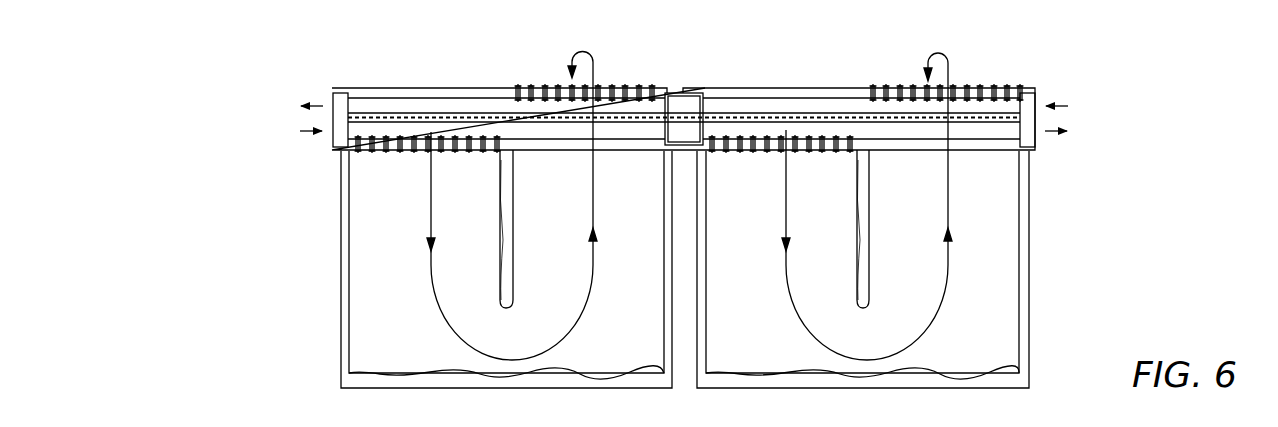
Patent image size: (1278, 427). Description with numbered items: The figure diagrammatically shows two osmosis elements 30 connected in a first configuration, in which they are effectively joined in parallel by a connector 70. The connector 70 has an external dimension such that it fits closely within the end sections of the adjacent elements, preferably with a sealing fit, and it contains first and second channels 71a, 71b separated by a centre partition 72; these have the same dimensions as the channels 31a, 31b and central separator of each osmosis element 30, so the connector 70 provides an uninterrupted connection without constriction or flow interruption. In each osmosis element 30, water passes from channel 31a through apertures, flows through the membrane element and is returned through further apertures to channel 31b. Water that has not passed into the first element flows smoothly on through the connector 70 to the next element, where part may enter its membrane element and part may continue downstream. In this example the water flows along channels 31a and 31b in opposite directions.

The osmosis element 30 is at (316, 242).
The channel 31a is at (356, 127).
The channel 31b is at (362, 103).
The connector 70 is at (686, 88).
The first channel 71a is at (703, 128).
The second channel 71b is at (700, 108).
The centre partition 72 is at (670, 92).